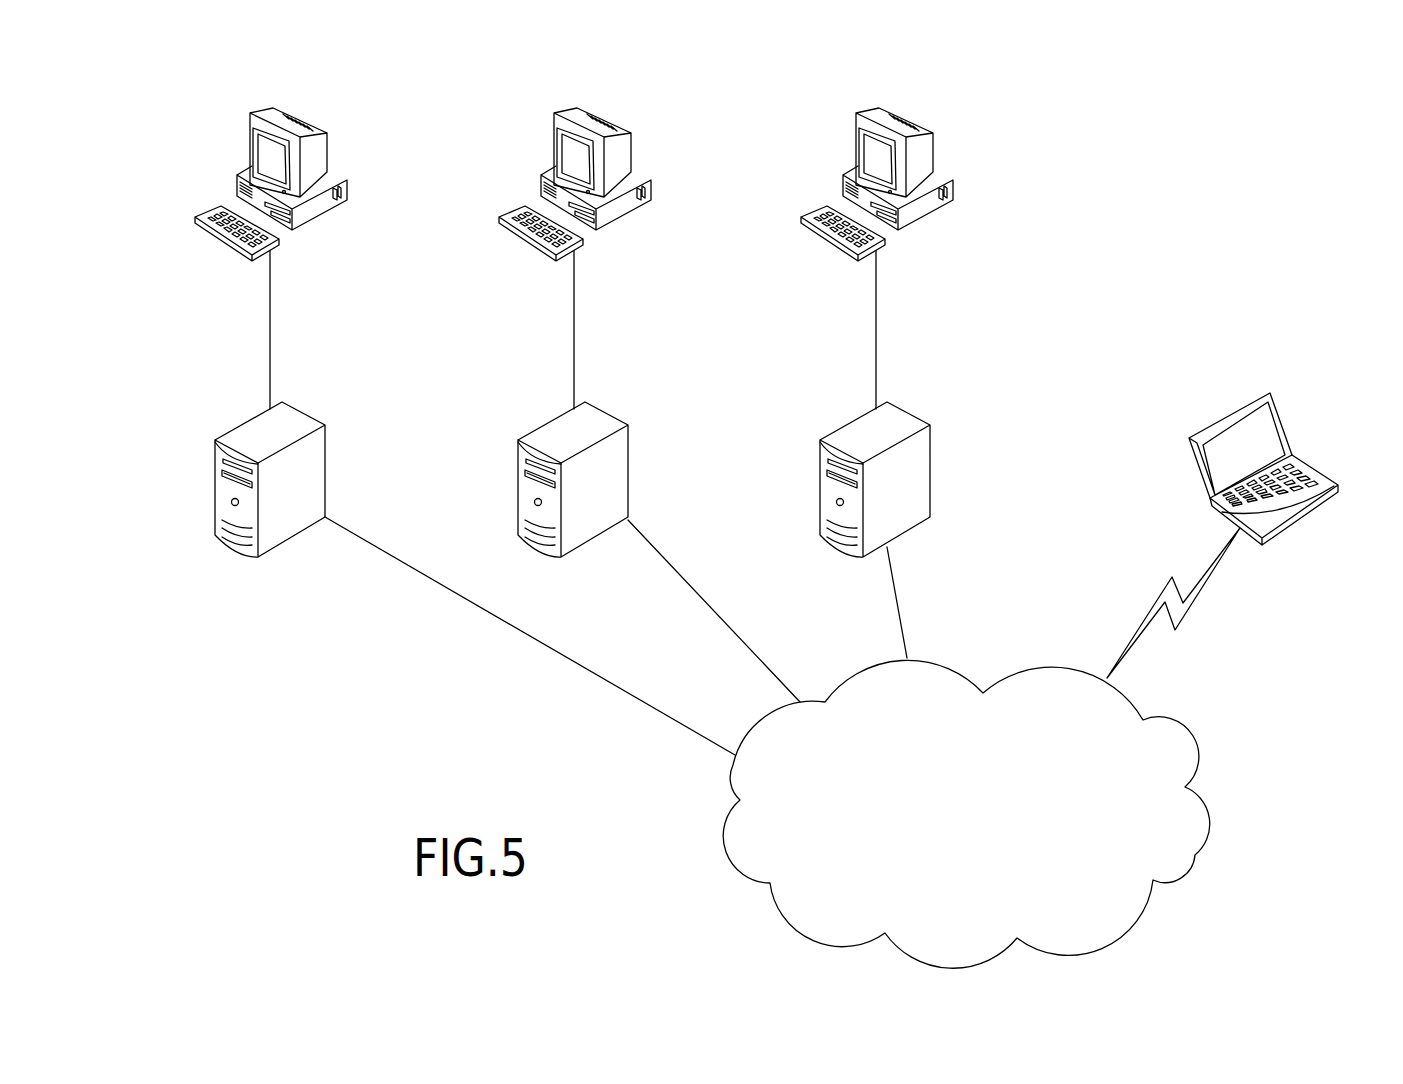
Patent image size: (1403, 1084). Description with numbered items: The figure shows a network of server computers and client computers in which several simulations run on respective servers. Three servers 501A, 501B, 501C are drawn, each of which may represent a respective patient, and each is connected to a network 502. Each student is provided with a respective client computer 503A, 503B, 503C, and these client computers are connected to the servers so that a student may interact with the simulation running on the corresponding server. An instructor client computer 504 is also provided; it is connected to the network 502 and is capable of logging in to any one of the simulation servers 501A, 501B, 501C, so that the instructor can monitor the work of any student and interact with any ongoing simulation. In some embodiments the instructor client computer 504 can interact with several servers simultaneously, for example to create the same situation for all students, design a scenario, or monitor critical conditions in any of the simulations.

The server 501A is at (305, 470).
The server 501B is at (608, 480).
The server 501C is at (912, 470).
The network 502 is at (981, 825).
The client computer 503A is at (310, 215).
The client computer 503B is at (614, 214).
The client computer 503C is at (916, 214).
The instructor client computer 504 is at (1280, 425).